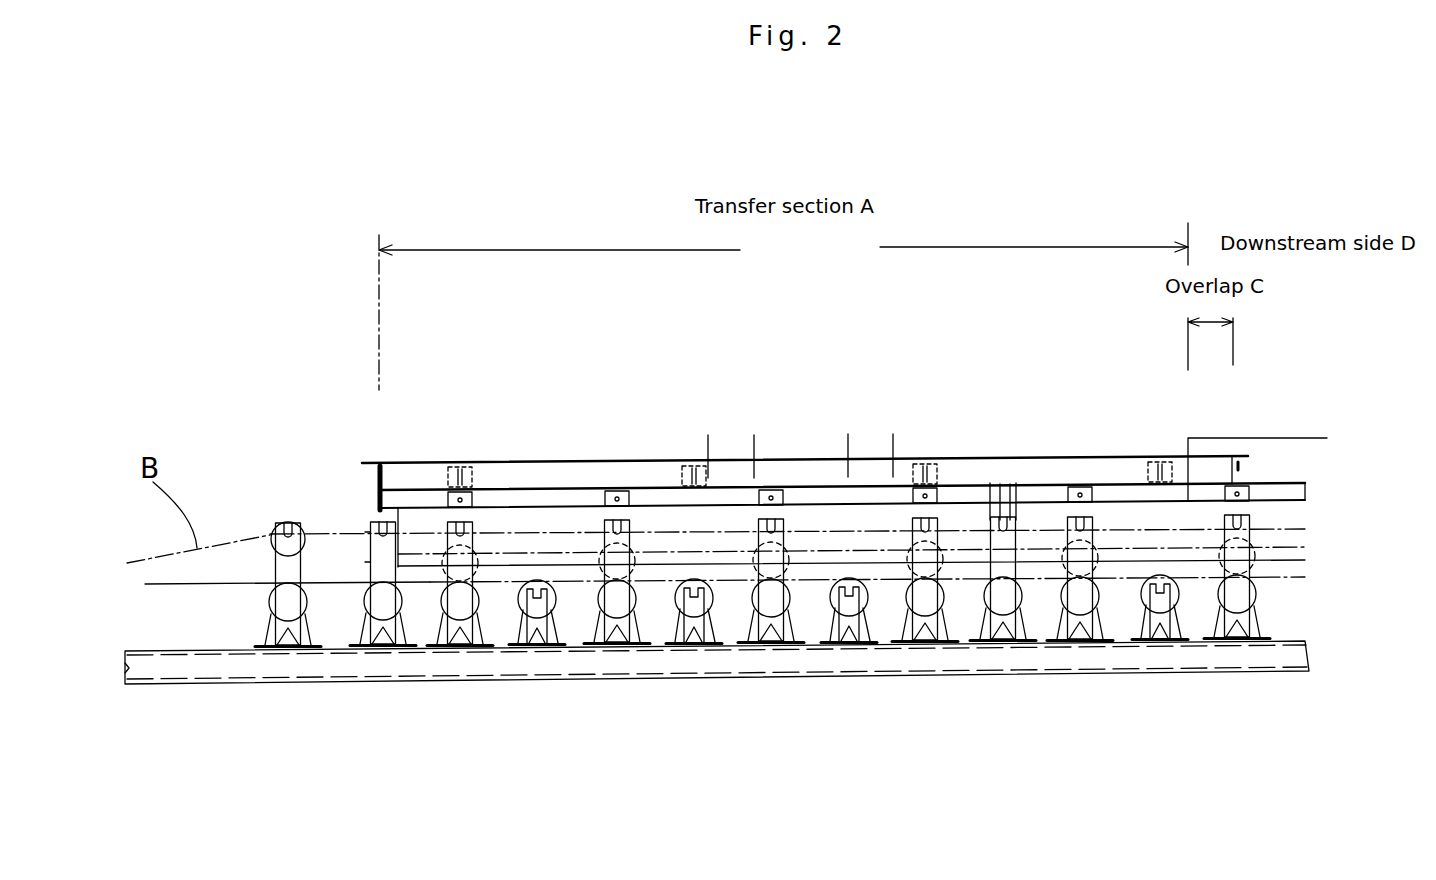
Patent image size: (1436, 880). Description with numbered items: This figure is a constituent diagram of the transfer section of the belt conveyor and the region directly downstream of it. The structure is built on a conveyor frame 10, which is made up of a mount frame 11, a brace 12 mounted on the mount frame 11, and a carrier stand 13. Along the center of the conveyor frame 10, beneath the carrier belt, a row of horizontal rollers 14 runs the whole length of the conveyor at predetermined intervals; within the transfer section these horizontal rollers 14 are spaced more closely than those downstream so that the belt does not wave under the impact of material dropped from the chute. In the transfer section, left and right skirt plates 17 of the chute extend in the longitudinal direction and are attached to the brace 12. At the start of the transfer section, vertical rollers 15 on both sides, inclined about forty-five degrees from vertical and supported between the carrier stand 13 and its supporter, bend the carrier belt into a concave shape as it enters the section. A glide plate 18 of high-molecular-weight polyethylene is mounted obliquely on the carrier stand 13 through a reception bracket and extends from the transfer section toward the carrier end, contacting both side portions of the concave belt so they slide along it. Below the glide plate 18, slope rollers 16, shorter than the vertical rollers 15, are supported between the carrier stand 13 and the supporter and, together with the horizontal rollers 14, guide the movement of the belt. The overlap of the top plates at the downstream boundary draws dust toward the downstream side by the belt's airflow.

The conveyor frame 10 is at (132, 703).
The mount frame 11 is at (194, 670).
The brace 12 is at (403, 645).
The carrier stand 13 is at (280, 630).
The horizontal rollers 14 is at (366, 610).
The vertical rollers 15 is at (270, 560).
The slope rollers 16 is at (427, 615).
The skirt plates 17 is at (515, 462).
The glide plate 18 is at (653, 497).